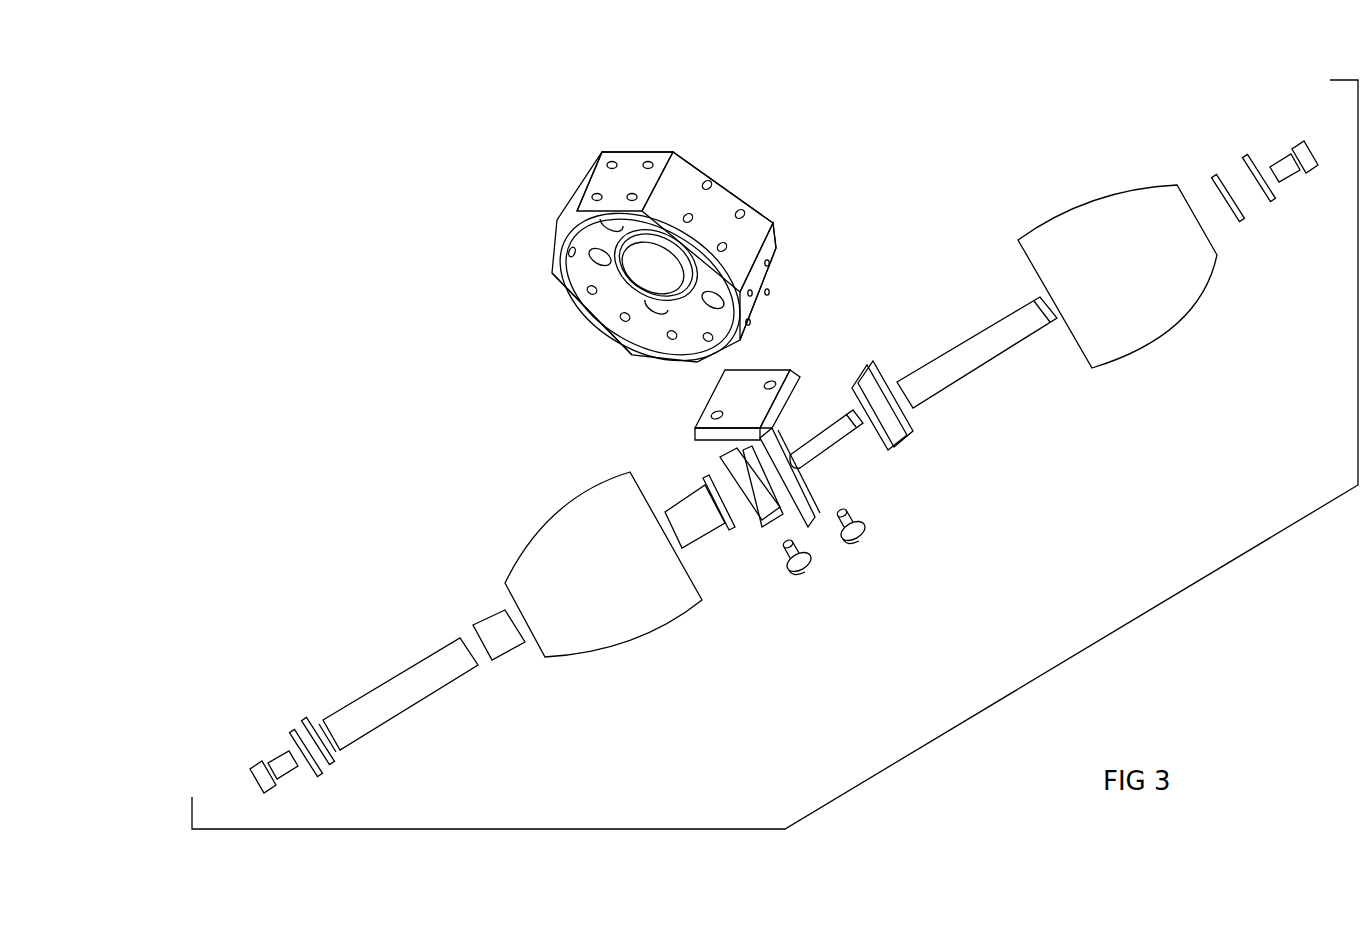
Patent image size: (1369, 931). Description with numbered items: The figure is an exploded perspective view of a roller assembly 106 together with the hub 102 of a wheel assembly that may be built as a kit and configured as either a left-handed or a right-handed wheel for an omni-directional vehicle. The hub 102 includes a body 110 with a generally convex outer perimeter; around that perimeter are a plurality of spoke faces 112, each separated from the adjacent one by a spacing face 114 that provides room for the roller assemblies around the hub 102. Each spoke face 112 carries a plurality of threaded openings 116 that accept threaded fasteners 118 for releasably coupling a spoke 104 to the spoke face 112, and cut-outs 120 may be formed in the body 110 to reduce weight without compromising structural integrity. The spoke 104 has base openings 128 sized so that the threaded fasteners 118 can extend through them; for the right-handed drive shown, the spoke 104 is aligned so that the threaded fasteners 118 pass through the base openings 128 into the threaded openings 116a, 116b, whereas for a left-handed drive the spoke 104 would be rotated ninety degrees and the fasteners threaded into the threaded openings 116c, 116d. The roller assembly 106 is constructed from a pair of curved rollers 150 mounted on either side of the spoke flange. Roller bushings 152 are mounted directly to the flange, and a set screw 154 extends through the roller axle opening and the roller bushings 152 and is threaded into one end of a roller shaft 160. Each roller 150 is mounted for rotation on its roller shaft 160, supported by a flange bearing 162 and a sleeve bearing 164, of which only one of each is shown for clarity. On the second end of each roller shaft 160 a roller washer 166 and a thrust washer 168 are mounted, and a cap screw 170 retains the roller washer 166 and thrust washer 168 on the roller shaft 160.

The hub 102 is at (658, 235).
The spoke 104 is at (858, 566).
The roller assembly 106 is at (775, 454).
The body 110 is at (711, 257).
The spoke face 112 is at (643, 231).
The spacing face 114 is at (662, 235).
The threaded opening 116 is at (703, 180).
The threaded opening 116a is at (817, 250).
The threaded opening 116b is at (818, 272).
The threaded opening 116c is at (809, 281).
The threaded opening 116d is at (808, 304).
The threaded fastener 118 is at (877, 586).
The cut-out 120 is at (598, 233).
The base opening 128 is at (740, 376).
The curved roller 150 is at (861, 422).
The roller bushing 152 is at (859, 529).
The set screw 154 is at (884, 513).
The roller shaft 160 is at (690, 536).
The flange bearing 162 is at (736, 601).
The sleeve bearing 164 is at (517, 667).
The roller washer 166 is at (747, 439).
The thrust washer 168 is at (758, 435).
The cap screw 170 is at (769, 433).